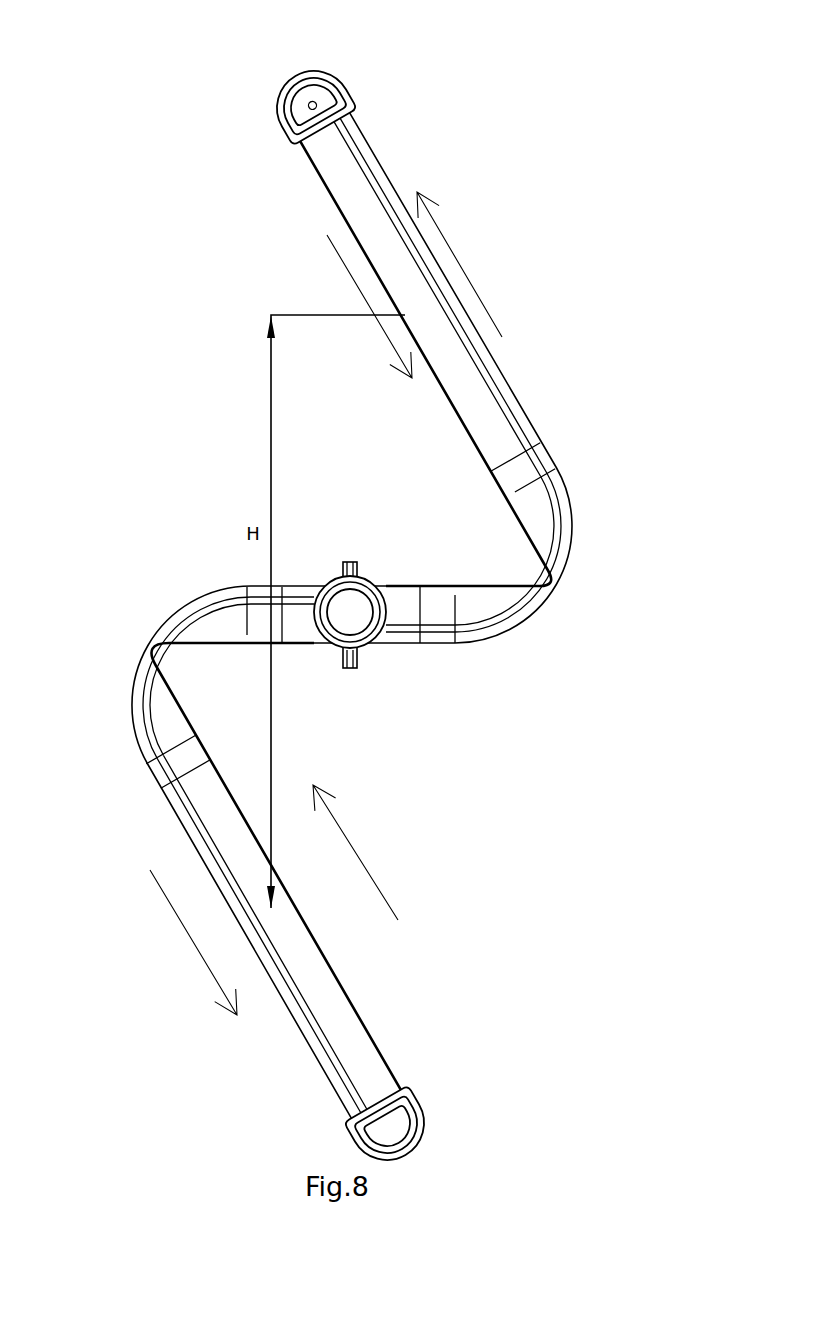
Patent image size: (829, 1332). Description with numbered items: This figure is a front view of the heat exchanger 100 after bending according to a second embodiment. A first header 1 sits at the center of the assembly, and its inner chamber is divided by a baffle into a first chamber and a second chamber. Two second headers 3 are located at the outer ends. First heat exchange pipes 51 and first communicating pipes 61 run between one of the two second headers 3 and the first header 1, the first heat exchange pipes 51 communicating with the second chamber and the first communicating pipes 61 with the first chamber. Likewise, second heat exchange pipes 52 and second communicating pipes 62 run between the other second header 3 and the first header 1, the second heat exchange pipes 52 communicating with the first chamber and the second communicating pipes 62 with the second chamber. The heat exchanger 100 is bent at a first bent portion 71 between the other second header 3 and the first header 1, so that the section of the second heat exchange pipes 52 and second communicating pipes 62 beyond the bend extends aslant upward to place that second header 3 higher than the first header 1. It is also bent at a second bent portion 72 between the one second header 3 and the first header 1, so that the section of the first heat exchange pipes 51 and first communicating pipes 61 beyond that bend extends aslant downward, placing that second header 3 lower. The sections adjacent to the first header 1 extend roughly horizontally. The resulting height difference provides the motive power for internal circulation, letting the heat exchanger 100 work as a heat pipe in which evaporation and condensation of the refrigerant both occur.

The heat exchanger 100 is at (433, 110).
The first header 1 is at (353, 627).
The second headers 3 is at (313, 85).
The first heat exchange pipes 51 is at (213, 627).
The second heat exchange pipes 52 is at (537, 508).
The first communicating pipes 61 is at (223, 593).
The second communicating pipes 62 is at (563, 515).
The first bent portion 71 is at (585, 613).
The second bent portion 72 is at (123, 638).